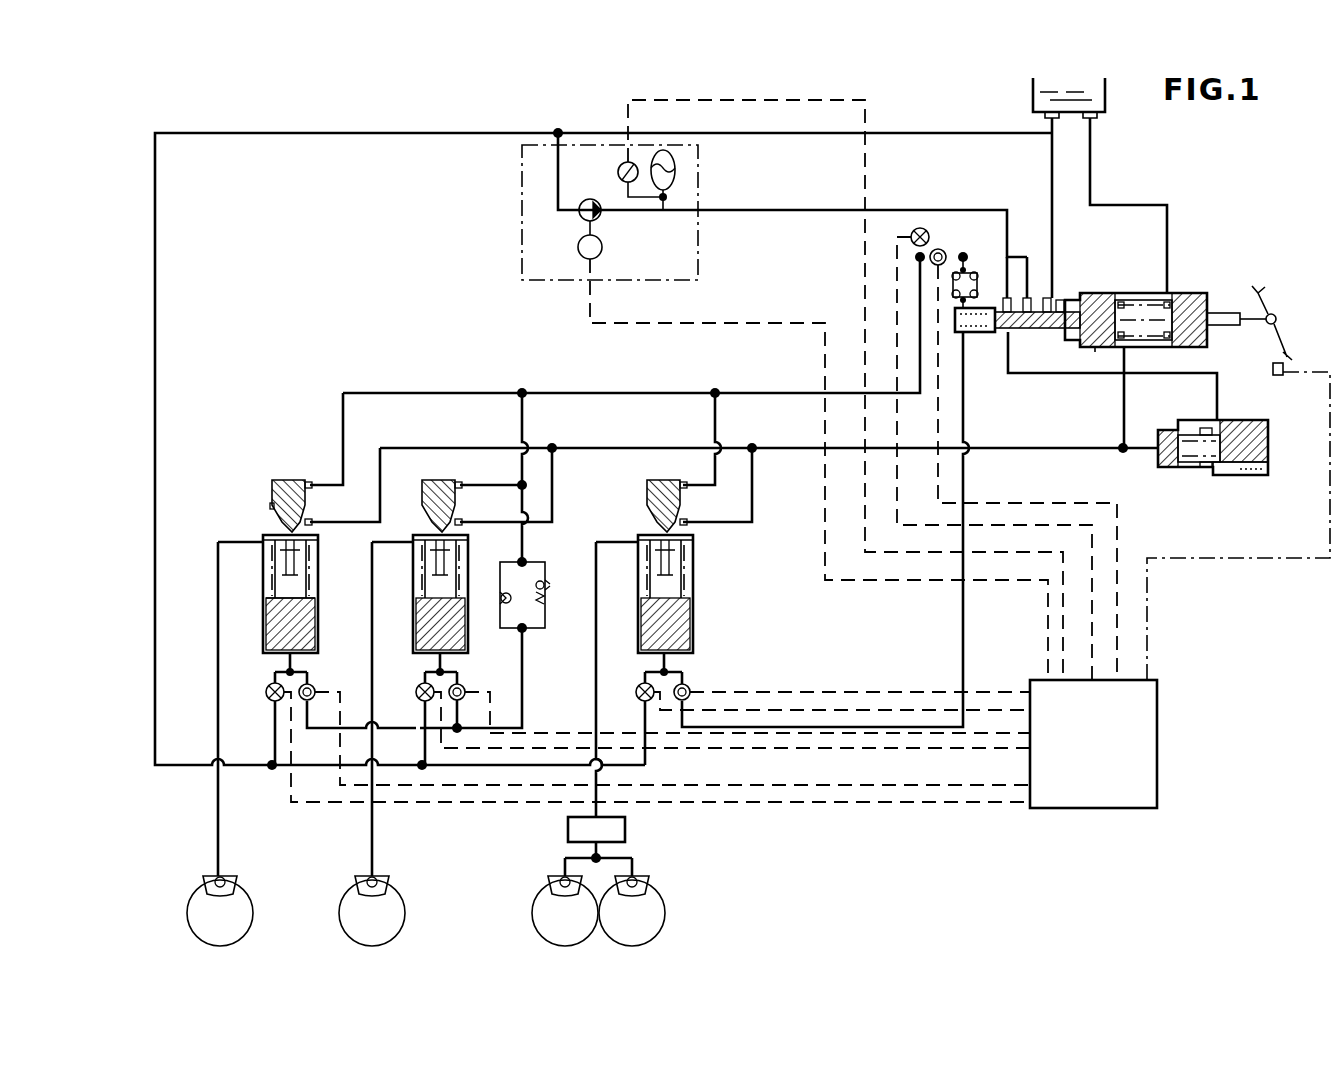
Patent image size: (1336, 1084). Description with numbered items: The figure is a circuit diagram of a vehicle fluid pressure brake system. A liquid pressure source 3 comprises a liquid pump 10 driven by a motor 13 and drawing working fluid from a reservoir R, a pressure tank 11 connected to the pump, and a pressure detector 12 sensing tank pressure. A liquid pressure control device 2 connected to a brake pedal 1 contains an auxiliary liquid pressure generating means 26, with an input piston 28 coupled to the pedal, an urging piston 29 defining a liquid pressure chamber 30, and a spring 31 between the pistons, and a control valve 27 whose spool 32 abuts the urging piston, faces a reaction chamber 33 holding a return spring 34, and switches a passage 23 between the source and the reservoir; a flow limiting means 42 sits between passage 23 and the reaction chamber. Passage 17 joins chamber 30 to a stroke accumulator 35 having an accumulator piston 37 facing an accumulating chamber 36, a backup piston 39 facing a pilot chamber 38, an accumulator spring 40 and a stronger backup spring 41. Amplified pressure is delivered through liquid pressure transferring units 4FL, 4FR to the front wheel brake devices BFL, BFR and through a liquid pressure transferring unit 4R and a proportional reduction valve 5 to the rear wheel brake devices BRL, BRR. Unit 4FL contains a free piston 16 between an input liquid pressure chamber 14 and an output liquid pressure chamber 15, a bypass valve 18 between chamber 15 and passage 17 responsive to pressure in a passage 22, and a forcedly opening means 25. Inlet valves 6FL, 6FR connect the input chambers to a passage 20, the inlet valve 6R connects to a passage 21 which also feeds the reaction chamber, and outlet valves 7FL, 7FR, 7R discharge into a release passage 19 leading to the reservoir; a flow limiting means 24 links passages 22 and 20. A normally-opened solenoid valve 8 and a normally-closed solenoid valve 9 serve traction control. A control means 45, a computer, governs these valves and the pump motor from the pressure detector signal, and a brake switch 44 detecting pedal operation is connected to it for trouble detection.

The brake pedal 1 is at (1284, 355).
The liquid pressure control device 2 is at (1062, 258).
The liquid pressure source 3 is at (522, 240).
The liquid pressure transferring unit 4FL is at (246, 636).
The liquid pressure transferring unit 4FR is at (500, 650).
The liquid pressure transferring unit 4R is at (710, 606).
The proportional reduction valve 5 is at (626, 830).
The inlet valve 6FL is at (313, 685).
The inlet valve 6FR is at (465, 688).
The inlet valve 6R is at (690, 686).
The outlet valve 7FL is at (268, 700).
The outlet valve 7FR is at (418, 694).
The outlet valve 7R is at (640, 694).
The normally-opened solenoid valve 8 is at (940, 247).
The normally-closed solenoid valve 9 is at (912, 230).
The liquid pump 10 is at (602, 224).
The pressure tank 11 is at (678, 172).
The pressure detector 12 is at (616, 176).
The motor 13 is at (578, 247).
The input liquid pressure chamber 14 is at (284, 655).
The output liquid pressure chamber 15 is at (268, 612).
The free piston 16 is at (300, 618).
The passage 17 is at (608, 447).
The bypass valve 18 is at (262, 478).
The release passage 19 is at (158, 290).
The passage 20 is at (526, 700).
The passage 21 is at (963, 628).
The passage 22 is at (568, 392).
The passage 23 is at (1027, 258).
The flow limiting means 24 is at (545, 556).
The forcedly opening means 25 is at (274, 558).
The auxiliary liquid pressure generating means 26 is at (1128, 290).
The control valve 27 is at (1060, 293).
The input piston 28 is at (1198, 347).
The urging piston 29 is at (1095, 350).
The liquid pressure chamber 30 is at (1148, 303).
The spring 31 is at (1195, 292).
The spool 32 is at (1026, 330).
The reaction chamber 33 is at (986, 308).
The return spring 34 is at (985, 336).
The stroke accumulator 35 is at (1255, 482).
The accumulating chamber 36 is at (1156, 442).
The accumulator piston 37 is at (1170, 468).
The pilot chamber 38 is at (1212, 432).
The backup piston 39 is at (1245, 422).
The accumulator spring 40 is at (1182, 462).
The backup spring 41 is at (1260, 465).
The flow limiting means 42 is at (945, 292).
The brake switch 44 is at (1275, 364).
The control means 45 is at (1104, 758).
The reservoir R is at (1105, 106).
The left front wheel brake device BFL is at (205, 882).
The right front wheel brake device BFR is at (357, 880).
The left rear wheel brake device BRL is at (548, 882).
The right rear wheel brake device BRR is at (652, 880).